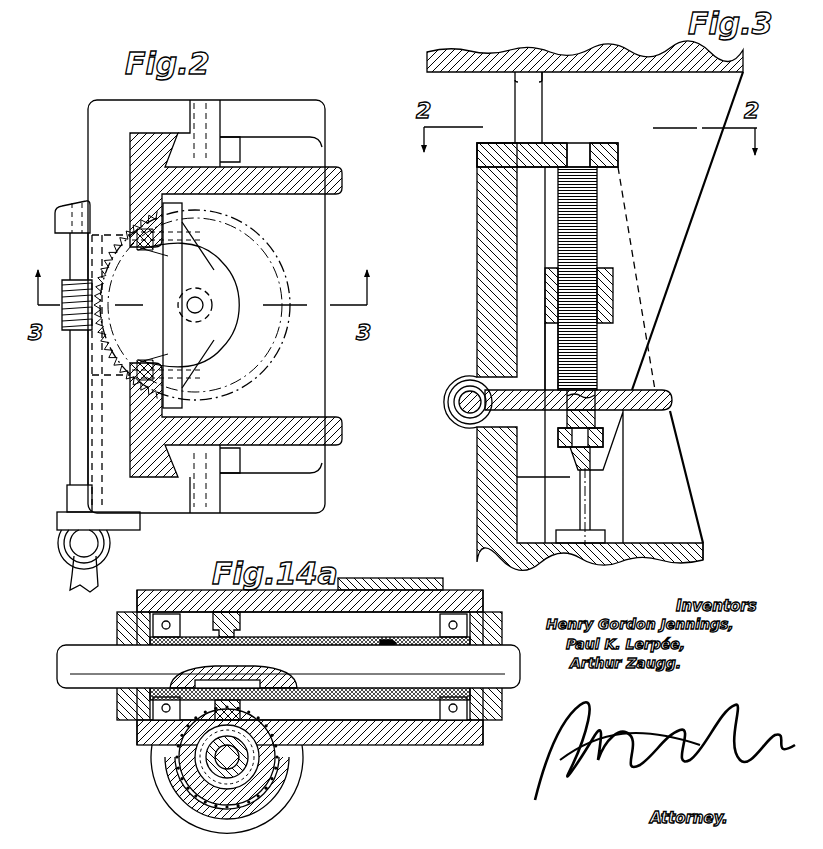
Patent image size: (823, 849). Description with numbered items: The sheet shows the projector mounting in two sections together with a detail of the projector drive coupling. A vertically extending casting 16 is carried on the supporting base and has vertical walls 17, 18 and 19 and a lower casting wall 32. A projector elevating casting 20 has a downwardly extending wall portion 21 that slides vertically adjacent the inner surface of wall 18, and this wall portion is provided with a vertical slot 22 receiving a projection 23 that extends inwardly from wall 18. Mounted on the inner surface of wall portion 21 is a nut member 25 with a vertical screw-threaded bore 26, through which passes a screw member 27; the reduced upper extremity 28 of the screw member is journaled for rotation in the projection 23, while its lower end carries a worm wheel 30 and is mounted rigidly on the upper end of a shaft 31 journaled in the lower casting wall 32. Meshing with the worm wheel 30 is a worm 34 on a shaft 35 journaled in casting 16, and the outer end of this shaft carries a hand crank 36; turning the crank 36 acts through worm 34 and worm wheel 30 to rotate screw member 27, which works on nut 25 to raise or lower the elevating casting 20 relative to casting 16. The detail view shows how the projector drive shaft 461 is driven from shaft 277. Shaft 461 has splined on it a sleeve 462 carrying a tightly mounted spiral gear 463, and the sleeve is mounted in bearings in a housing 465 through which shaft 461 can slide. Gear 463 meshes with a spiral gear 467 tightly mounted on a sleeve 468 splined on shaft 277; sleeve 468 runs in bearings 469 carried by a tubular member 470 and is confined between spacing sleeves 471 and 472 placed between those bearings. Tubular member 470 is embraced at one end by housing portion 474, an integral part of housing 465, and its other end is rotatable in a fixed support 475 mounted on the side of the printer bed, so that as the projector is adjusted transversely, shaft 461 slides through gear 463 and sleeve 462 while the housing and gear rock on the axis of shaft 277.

In FIG. 2, the vertically extending casting 16 is at (88, 148).
In FIG. 3, the vertically extending casting 16 is at (477, 239).
In FIG. 2, the vertical wall 17 is at (237, 500).
In FIG. 2, the vertical wall 18 is at (100, 175).
In FIG. 3, the vertical wall 18 is at (478, 282).
In FIG. 2, the vertical wall 19 is at (173, 112).
In FIG. 3, the vertical wall 19 is at (662, 447).
In FIG. 2, the projector elevating casting 20 is at (344, 184).
In FIG. 3, the projector elevating casting 20 is at (427, 62).
In FIG. 3, the downwardly extending wall portion 21 is at (524, 96).
In FIG. 2, the vertical slot 22 is at (150, 250).
In FIG. 3, the vertical slot 22 is at (530, 123).
In FIG. 2, the projection 23 is at (254, 342).
In FIG. 3, the projection 23 is at (620, 157).
In FIG. 2, the nut member 25 is at (236, 268).
In FIG. 3, the nut member 25 is at (615, 300).
In FIG. 2, the screw-threaded bore 26 is at (172, 305).
In FIG. 3, the screw-threaded bore 26 is at (598, 283).
In FIG. 2, the screw member 27 is at (210, 290).
In FIG. 3, the screw member 27 is at (580, 236).
In FIG. 2, the reduced upper extremity 28 is at (198, 305).
In FIG. 3, the reduced upper extremity 28 is at (583, 155).
In FIG. 2, the worm wheel 30 is at (240, 367).
In FIG. 3, the worm wheel 30 is at (674, 398).
In FIG. 3, the shaft 31 is at (582, 512).
In FIG. 3, the lower casting wall 32 is at (636, 546).
In FIG. 2, the worm 34 is at (75, 275).
In FIG. 3, the worm 34 is at (452, 400).
In FIG. 2, the shaft 35 is at (70, 412).
In FIG. 3, the shaft 35 is at (456, 420).
In FIG. 2, the hand crank 36 is at (75, 576).
In FIG. 14A, the shaft 277 is at (360, 655).
In FIG. 14A, the drive shaft 461 is at (274, 782).
In FIG. 14A, the sleeve 462 is at (214, 770).
In FIG. 14A, the spiral gear 463 is at (268, 762).
In FIG. 14A, the housing 465 is at (198, 808).
In FIG. 14A, the spiral gear 467 is at (243, 633).
In FIG. 14A, the sleeve 468 is at (297, 647).
In FIG. 14A, the bearings 469 is at (150, 628).
In FIG. 14A, the tubular member 470 is at (212, 607).
In FIG. 14A, the spacing sleeve 471 is at (195, 638).
In FIG. 14A, the spacing sleeve 472 is at (388, 645).
In FIG. 14A, the housing portion 474 is at (190, 598).
In FIG. 14A, the fixed support 475 is at (400, 597).